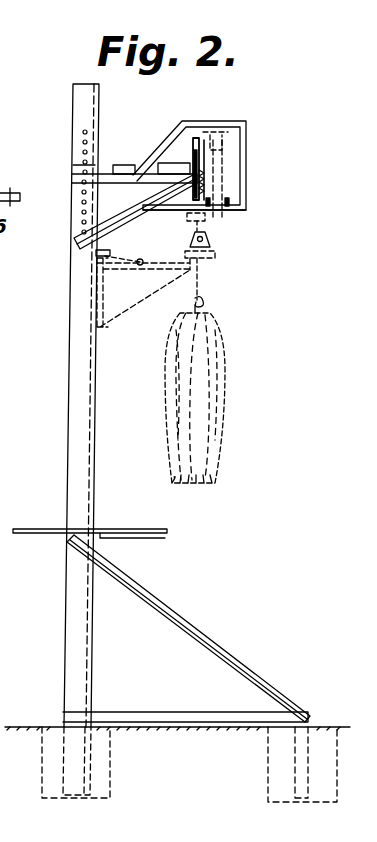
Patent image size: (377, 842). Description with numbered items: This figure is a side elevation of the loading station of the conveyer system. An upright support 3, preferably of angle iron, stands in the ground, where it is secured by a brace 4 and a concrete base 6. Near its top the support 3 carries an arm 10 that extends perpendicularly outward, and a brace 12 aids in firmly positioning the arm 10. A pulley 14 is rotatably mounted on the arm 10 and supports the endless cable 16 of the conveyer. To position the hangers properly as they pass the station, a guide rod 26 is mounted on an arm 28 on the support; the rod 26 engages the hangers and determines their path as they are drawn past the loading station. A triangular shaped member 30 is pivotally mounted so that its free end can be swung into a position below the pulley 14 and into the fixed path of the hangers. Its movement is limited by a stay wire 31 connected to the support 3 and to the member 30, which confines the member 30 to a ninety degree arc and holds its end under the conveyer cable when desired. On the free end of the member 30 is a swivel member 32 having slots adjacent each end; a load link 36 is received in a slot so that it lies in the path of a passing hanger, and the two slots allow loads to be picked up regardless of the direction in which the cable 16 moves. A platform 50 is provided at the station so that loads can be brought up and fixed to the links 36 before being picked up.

The support 3 is at (70, 435).
The brace 4 is at (247, 675).
The concrete base 6 is at (268, 760).
The arm 10 is at (103, 177).
The brace 12 is at (122, 222).
The pulley 14 is at (203, 153).
The endless cable 16 is at (200, 140).
The guide rod 26 is at (227, 204).
The arm 28 is at (240, 178).
The triangular shaped member 30 is at (143, 298).
The stay wire 31 is at (96, 256).
The swivel member 32 is at (200, 257).
The load link 36 is at (207, 268).
The platform 50 is at (125, 532).